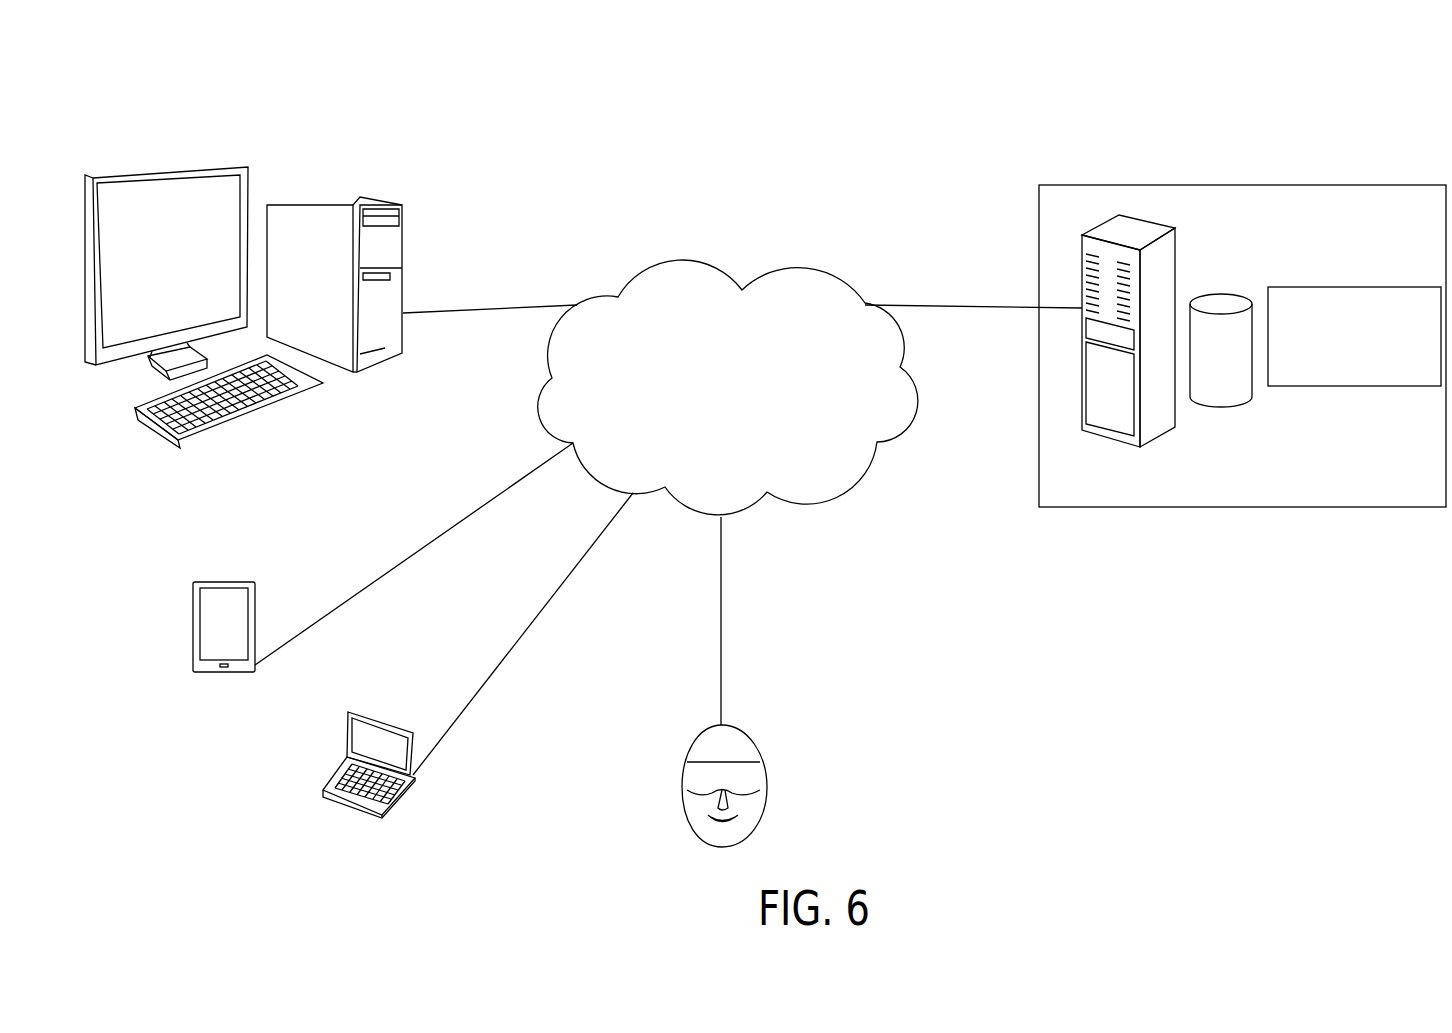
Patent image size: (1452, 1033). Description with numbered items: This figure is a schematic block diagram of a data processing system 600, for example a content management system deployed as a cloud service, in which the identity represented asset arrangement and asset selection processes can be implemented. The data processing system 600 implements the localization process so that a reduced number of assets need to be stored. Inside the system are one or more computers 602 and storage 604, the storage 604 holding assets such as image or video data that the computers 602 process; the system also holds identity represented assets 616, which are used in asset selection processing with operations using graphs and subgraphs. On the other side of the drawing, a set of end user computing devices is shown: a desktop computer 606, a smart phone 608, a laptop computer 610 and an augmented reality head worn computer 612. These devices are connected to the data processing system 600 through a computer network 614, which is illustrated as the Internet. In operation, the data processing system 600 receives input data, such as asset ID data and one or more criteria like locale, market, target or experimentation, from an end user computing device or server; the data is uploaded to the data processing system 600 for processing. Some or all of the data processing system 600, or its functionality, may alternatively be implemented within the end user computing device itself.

The data processing system 600 is at (1197, 124).
The computers 602 is at (1158, 230).
The storage 604 is at (1216, 297).
The desktop computer 606 is at (168, 126).
The smart phone 608 is at (233, 580).
The laptop computer 610 is at (388, 720).
The augmented reality head worn computer 612 is at (748, 735).
The computer network 614 is at (754, 178).
The identity represented assets 616 is at (1324, 386).